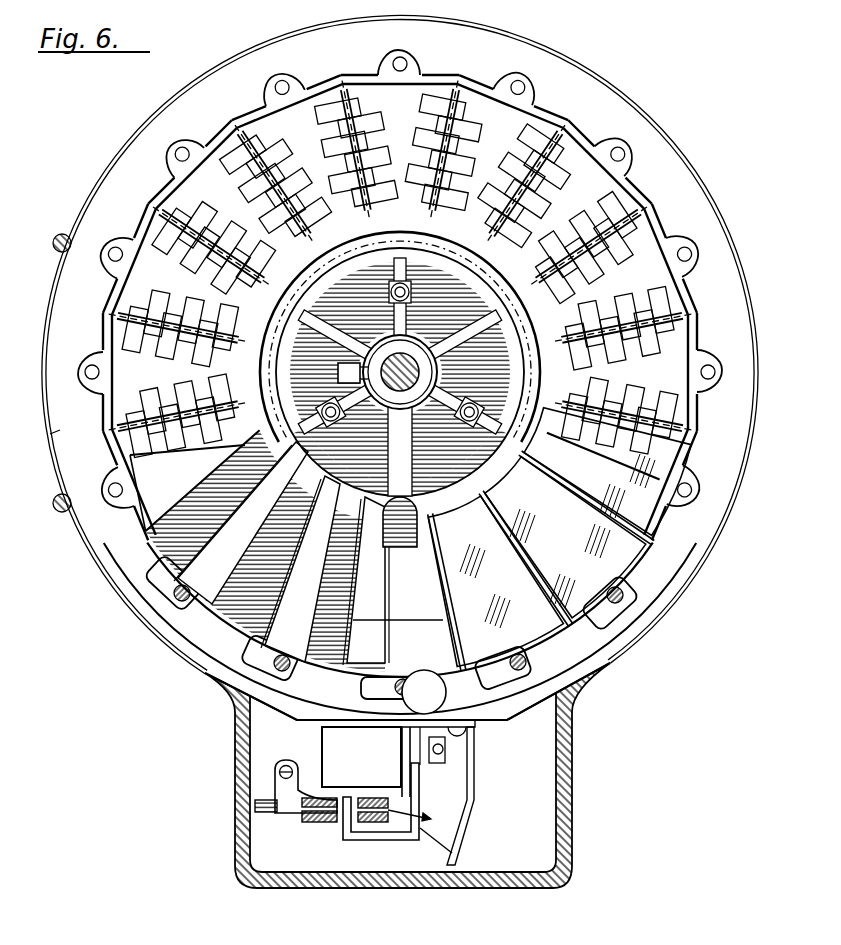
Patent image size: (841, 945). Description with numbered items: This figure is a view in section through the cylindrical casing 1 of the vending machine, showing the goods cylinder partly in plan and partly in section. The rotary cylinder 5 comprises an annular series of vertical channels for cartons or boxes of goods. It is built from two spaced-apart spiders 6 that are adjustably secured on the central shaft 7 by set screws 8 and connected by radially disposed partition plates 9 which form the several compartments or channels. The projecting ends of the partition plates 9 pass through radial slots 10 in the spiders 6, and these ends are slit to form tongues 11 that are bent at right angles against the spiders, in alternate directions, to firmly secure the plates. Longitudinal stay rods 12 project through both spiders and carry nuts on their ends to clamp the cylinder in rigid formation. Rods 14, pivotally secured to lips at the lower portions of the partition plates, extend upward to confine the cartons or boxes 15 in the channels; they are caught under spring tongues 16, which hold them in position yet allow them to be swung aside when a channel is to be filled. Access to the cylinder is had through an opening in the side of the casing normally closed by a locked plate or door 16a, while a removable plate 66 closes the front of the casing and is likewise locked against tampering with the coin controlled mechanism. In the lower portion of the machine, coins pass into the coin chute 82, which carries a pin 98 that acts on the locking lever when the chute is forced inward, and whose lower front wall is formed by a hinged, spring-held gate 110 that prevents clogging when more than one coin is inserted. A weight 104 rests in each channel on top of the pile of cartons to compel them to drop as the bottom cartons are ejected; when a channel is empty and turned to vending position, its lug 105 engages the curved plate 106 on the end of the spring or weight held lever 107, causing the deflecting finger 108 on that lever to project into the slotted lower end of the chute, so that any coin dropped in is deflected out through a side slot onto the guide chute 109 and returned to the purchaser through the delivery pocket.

The cylindrical casing 1 is at (140, 140).
The rotary cylinder 5 is at (240, 537).
The spiders 6 is at (448, 78).
The central shaft 7 is at (402, 360).
The set screws 8 is at (346, 363).
The partition plates 9 is at (428, 214).
The radial slots 10 is at (400, 260).
The tongues 11 is at (380, 136).
The longitudinal stay rods 12 is at (395, 300).
The rods 14 is at (281, 88).
The cartons or boxes 15 is at (559, 537).
The spring tongues 16 is at (268, 82).
The plate or door 16a is at (45, 429).
The removable plate 66 is at (407, 784).
The coin chute 82 is at (306, 786).
The pin 98 is at (265, 798).
The weight 104 is at (398, 558).
The lug 105 is at (424, 692).
The curved plate 106 is at (450, 716).
The spring or weight held lever 107 is at (390, 838).
The deflecting finger 108 is at (343, 835).
The guide chute 109 is at (460, 775).
The gate 110 is at (308, 824).